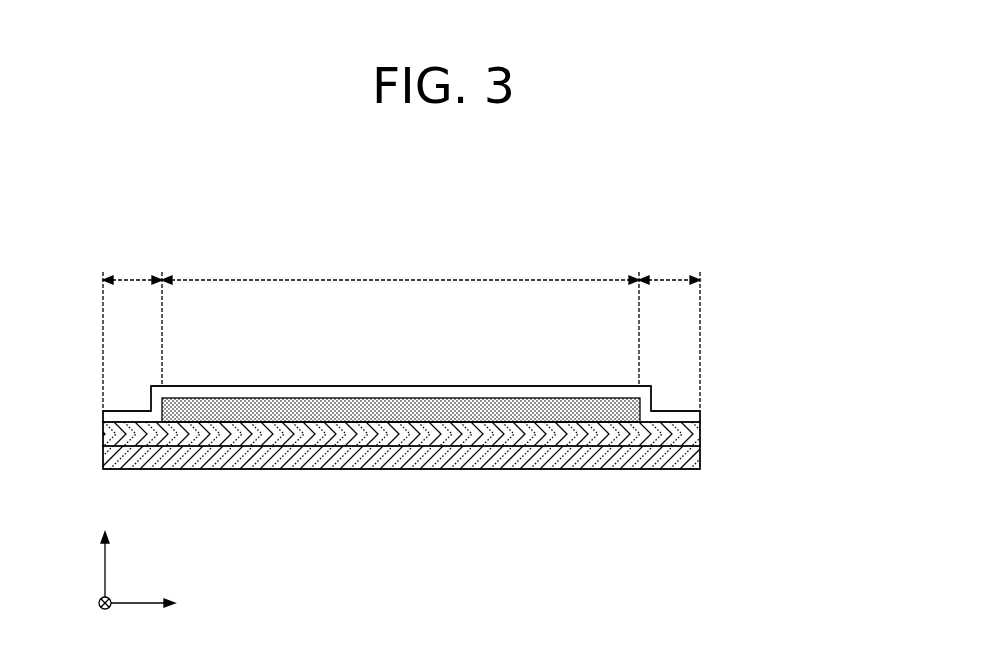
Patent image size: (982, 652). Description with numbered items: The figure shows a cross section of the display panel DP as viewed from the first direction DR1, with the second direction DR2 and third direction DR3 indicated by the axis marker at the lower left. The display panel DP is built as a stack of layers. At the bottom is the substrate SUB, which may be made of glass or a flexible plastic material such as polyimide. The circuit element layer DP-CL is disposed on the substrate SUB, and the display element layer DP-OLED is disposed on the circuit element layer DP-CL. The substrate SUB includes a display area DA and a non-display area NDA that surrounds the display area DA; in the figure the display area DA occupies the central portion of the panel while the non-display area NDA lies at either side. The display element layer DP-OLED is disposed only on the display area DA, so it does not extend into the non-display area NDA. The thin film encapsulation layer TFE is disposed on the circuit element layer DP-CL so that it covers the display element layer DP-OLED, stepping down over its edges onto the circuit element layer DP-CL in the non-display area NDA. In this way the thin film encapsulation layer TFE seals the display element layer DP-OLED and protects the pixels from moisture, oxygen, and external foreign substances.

The display panel DP is at (752, 282).
The thin film encapsulation layer TFE is at (362, 389).
The display element layer DP-OLED is at (455, 408).
The circuit element layer DP-CL is at (690, 432).
The substrate SUB is at (688, 456).
The non-display area NDA is at (401, 265).
The display area DA is at (400, 265).
The first direction DR1 is at (104, 618).
The second direction DR2 is at (165, 605).
The third direction DR3 is at (104, 552).